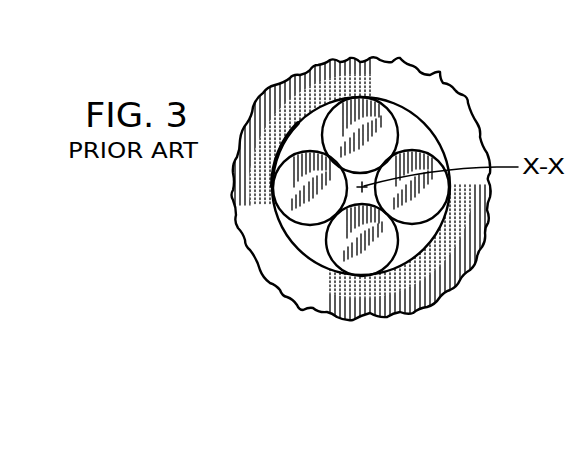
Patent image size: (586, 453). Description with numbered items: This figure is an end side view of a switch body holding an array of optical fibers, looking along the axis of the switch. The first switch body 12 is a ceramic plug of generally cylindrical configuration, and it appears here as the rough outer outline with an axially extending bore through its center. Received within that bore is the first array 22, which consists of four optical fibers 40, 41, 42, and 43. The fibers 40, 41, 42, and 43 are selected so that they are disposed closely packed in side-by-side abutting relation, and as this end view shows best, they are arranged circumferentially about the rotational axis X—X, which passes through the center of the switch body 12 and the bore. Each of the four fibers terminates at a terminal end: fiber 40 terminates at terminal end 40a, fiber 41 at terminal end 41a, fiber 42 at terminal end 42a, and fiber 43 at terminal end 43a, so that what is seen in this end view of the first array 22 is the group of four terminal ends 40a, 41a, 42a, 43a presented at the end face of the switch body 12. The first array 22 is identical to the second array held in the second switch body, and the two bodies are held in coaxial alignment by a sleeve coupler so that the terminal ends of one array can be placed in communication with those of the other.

The first switch body 12 is at (315, 70).
The first array 22 is at (274, 102).
The optical fiber 40 is at (380, 140).
The terminal end 40a is at (363, 100).
The optical fiber 41 is at (421, 151).
The terminal end 41a is at (425, 190).
The optical fiber 42 is at (398, 237).
The terminal end 42a is at (355, 252).
The optical fiber 43 is at (295, 228).
The terminal end 43a is at (305, 188).